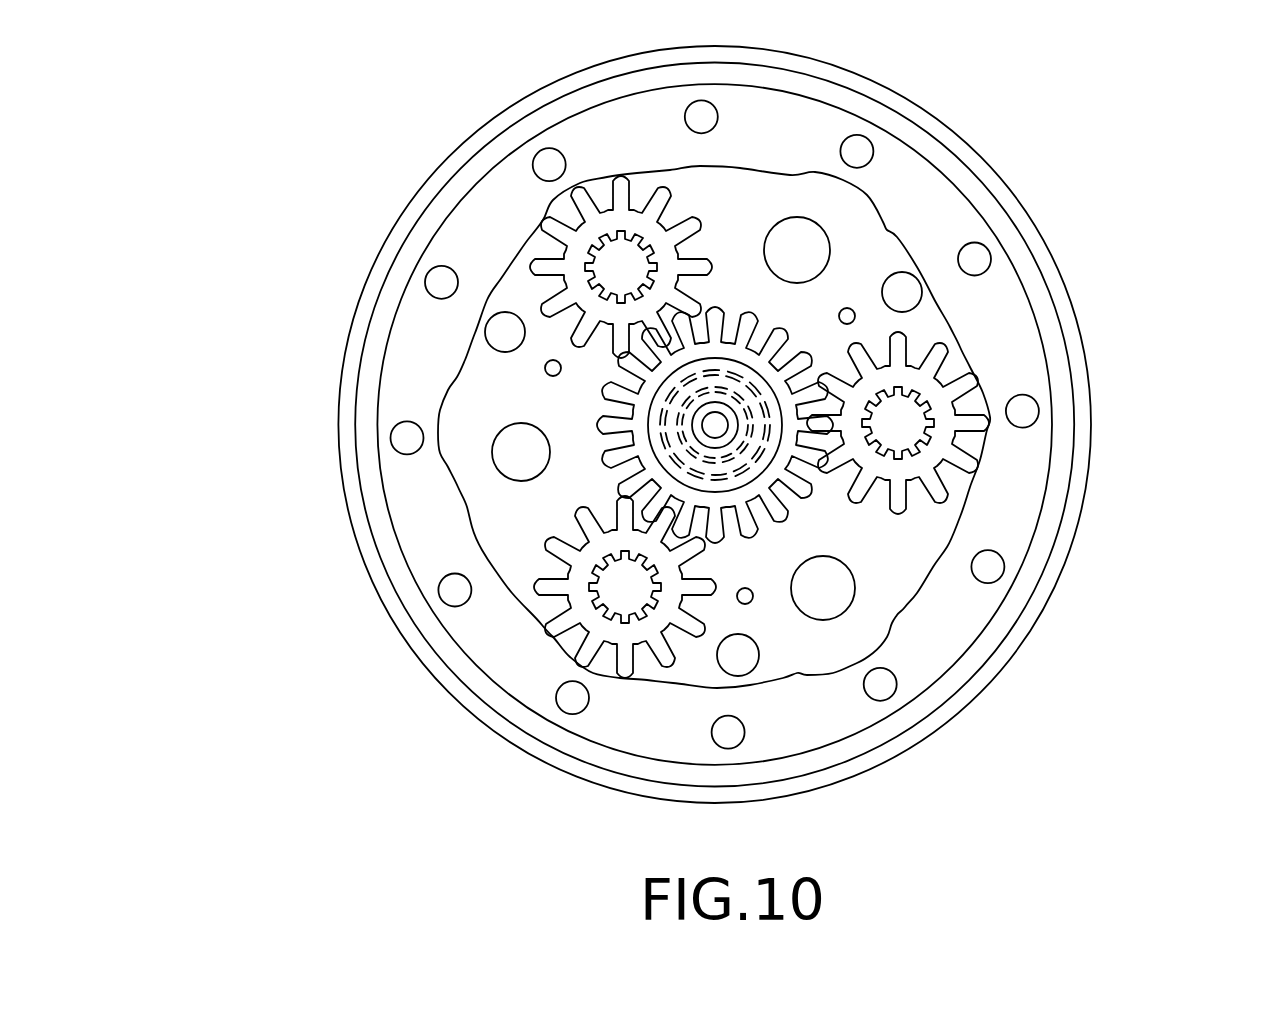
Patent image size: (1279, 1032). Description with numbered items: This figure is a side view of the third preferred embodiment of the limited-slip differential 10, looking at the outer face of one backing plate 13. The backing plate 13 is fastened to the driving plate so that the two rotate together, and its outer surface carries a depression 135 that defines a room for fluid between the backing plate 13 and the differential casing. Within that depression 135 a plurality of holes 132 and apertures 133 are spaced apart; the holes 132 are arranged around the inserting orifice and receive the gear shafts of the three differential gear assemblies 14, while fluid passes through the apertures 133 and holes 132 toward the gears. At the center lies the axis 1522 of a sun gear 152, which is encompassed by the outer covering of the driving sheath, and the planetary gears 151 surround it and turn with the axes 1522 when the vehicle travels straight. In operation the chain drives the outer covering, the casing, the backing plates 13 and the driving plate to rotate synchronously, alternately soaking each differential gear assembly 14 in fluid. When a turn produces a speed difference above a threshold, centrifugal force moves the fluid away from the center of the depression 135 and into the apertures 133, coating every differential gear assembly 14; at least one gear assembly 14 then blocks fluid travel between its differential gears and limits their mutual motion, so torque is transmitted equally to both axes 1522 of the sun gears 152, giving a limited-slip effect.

The gear transmission assembly 10 is at (168, 212).
The backing plate 13 is at (1040, 253).
The differential gear assembly 14 is at (590, 236).
The planetary gear 151 is at (956, 368).
The axis of sun gear 1522 is at (707, 427).
The sun gear 152 is at (793, 517).
The depression 135 is at (903, 545).
The hole 132 is at (487, 458).
The aperture 133 is at (457, 592).